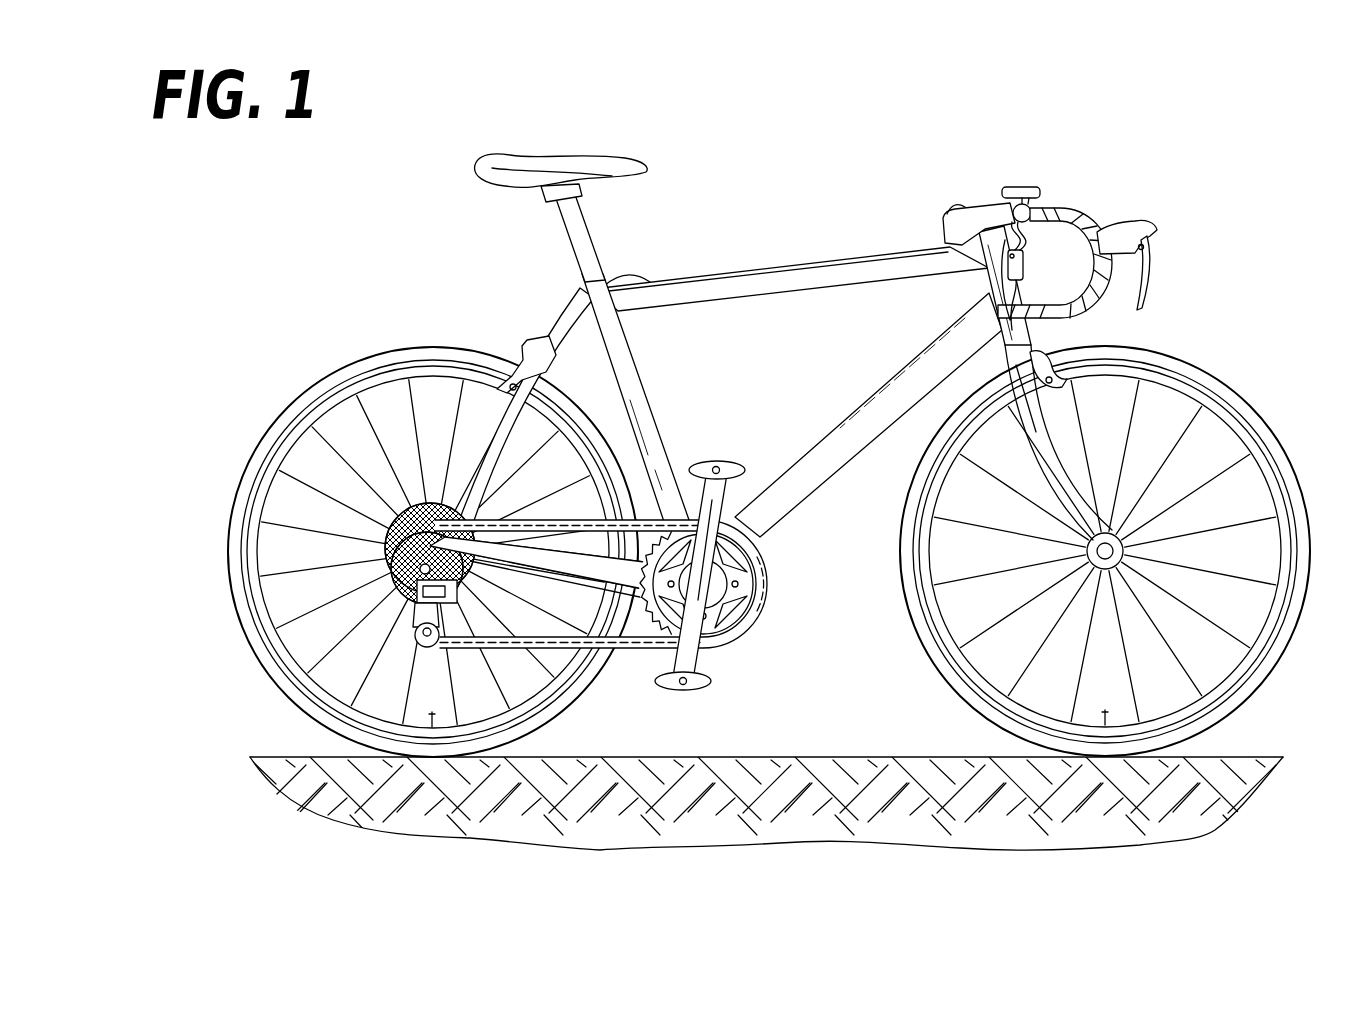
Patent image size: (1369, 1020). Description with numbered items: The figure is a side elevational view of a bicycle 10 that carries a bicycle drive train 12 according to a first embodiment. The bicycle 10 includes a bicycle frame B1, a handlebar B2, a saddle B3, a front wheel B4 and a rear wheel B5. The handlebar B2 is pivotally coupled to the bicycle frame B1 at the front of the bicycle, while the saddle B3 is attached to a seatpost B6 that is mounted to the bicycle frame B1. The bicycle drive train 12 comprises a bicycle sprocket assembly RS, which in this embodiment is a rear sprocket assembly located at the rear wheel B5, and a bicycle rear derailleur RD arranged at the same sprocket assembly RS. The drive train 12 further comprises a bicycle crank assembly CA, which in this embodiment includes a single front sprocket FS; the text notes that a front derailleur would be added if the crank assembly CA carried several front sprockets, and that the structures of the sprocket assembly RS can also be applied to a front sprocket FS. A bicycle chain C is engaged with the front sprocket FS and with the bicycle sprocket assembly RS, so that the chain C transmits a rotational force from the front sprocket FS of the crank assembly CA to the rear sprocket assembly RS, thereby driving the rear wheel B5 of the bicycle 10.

The bicycle 10 is at (736, 408).
The bicycle drive train 12 is at (649, 599).
The bicycle frame B1 is at (775, 309).
The handlebar B2 is at (1086, 205).
The saddle B3 is at (530, 160).
The front wheel B4 is at (1195, 357).
The rear wheel B5 is at (434, 346).
The seatpost B6 is at (585, 249).
The bicycle chain C is at (622, 644).
The bicycle crank assembly CA is at (716, 670).
The front sprocket FS is at (649, 630).
The bicycle sprocket assembly RS is at (389, 513).
The bicycle rear derailleur RD is at (423, 658).